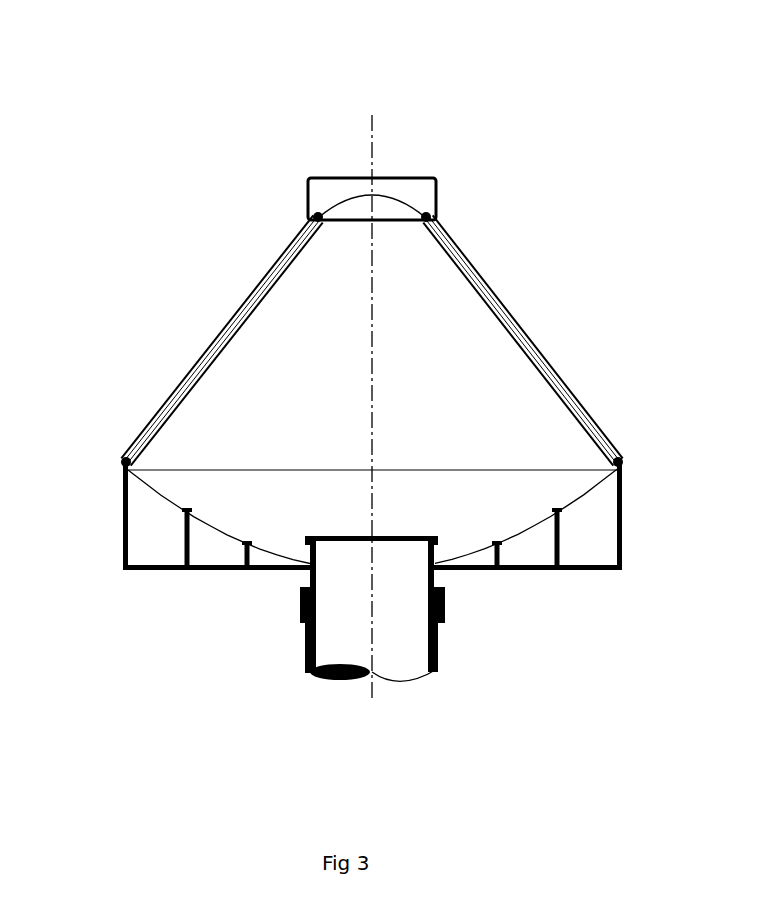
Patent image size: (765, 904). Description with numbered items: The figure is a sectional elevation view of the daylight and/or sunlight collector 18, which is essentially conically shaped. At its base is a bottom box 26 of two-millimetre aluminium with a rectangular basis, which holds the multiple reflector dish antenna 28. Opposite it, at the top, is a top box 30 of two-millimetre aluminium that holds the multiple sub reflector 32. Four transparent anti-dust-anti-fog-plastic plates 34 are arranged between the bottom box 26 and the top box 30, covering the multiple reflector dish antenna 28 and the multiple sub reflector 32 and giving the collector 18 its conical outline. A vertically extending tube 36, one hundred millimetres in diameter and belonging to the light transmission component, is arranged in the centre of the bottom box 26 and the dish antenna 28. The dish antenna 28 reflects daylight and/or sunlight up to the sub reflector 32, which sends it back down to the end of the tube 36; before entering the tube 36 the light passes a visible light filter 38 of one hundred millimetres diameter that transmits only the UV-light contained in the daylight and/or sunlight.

The daylight and/or sunlight collector 18 is at (270, 118).
The bottom box 26 is at (120, 545).
The multiple reflector dish antenna 28 is at (216, 528).
The top box 30 is at (440, 207).
The multiple sub reflector 32 is at (402, 205).
The transparent anti-dust-anti-fog-plastic plate 34 is at (205, 345).
The vertically extending tube 36 is at (440, 650).
The visible light filter 38 is at (393, 537).